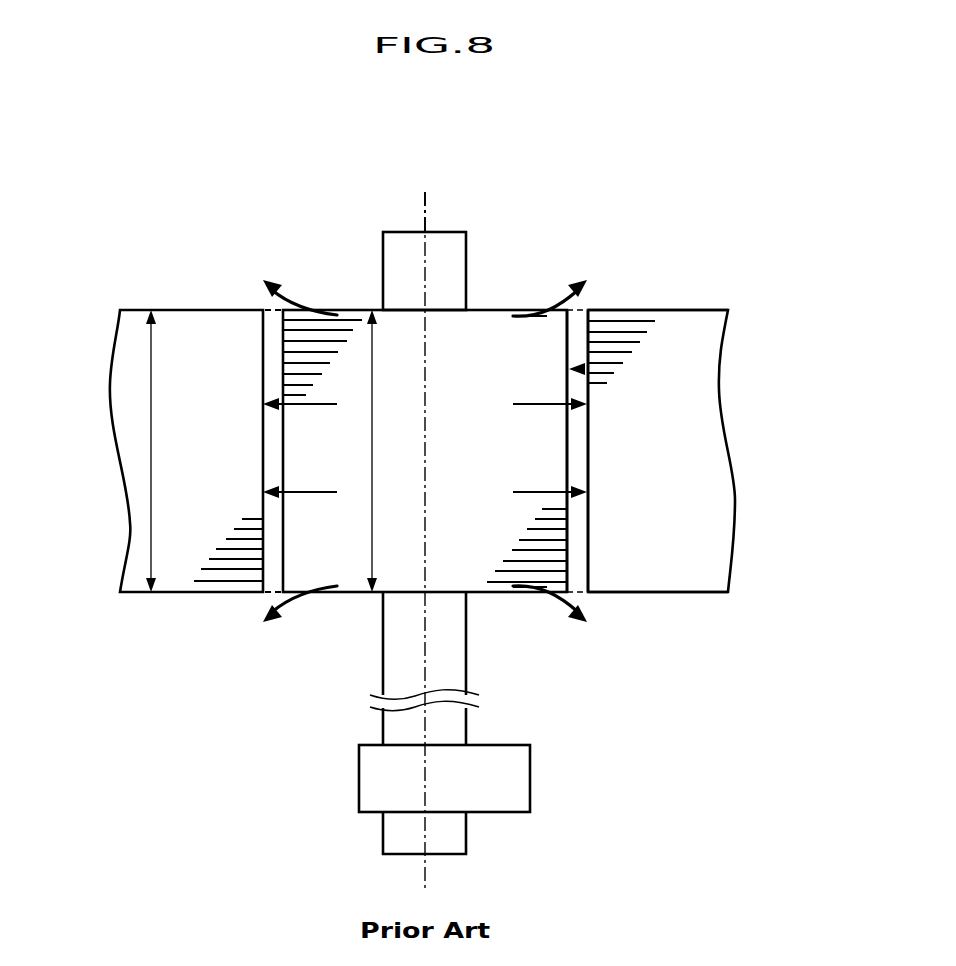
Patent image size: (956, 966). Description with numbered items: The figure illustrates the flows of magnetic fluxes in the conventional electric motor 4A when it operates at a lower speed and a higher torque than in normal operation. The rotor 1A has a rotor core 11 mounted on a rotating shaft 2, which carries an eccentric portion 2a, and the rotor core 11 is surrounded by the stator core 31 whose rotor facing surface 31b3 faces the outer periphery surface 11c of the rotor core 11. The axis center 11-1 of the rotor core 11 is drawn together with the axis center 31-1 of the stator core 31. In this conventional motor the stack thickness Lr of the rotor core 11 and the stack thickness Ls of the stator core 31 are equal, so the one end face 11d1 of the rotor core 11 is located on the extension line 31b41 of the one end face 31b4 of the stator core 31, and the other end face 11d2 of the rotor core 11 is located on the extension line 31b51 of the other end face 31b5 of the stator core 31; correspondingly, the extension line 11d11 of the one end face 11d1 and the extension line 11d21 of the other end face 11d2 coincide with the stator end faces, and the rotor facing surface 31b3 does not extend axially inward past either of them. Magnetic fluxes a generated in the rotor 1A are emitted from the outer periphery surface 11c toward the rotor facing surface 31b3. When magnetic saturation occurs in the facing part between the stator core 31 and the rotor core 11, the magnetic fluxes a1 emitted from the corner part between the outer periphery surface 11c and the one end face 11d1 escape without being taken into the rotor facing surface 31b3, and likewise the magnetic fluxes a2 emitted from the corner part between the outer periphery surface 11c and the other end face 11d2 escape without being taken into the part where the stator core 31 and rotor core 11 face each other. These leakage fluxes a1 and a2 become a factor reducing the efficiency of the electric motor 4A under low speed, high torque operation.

The electric motor 4A is at (409, 151).
The rotating shaft 2 is at (455, 232).
The eccentric portion 2a is at (530, 778).
The rotor core 11 is at (490, 458).
The outer periphery surface 11c is at (567, 532).
The one end face 11d1 is at (503, 311).
The other end face 11d2 is at (503, 595).
The extension line 11d11 is at (270, 308).
The extension line 11d21 is at (266, 596).
The axis center 11-1 is at (423, 210).
The stator core 31 is at (690, 374).
The axis center 31-1 is at (423, 210).
The rotor facing surface 31b3 is at (588, 421).
The one end face 31b4 is at (693, 310).
The other end face 31b5 is at (680, 596).
The extension line 31b41 is at (270, 308).
The extension line 31b51 is at (266, 596).
The rotor 1A is at (585, 369).
The stack thickness Ls is at (151, 452).
The stack thickness Lr is at (372, 452).
The magnetic fluxes a is at (335, 404).
The magnetic fluxes a1 is at (288, 300).
The magnetic fluxes a2 is at (322, 585).